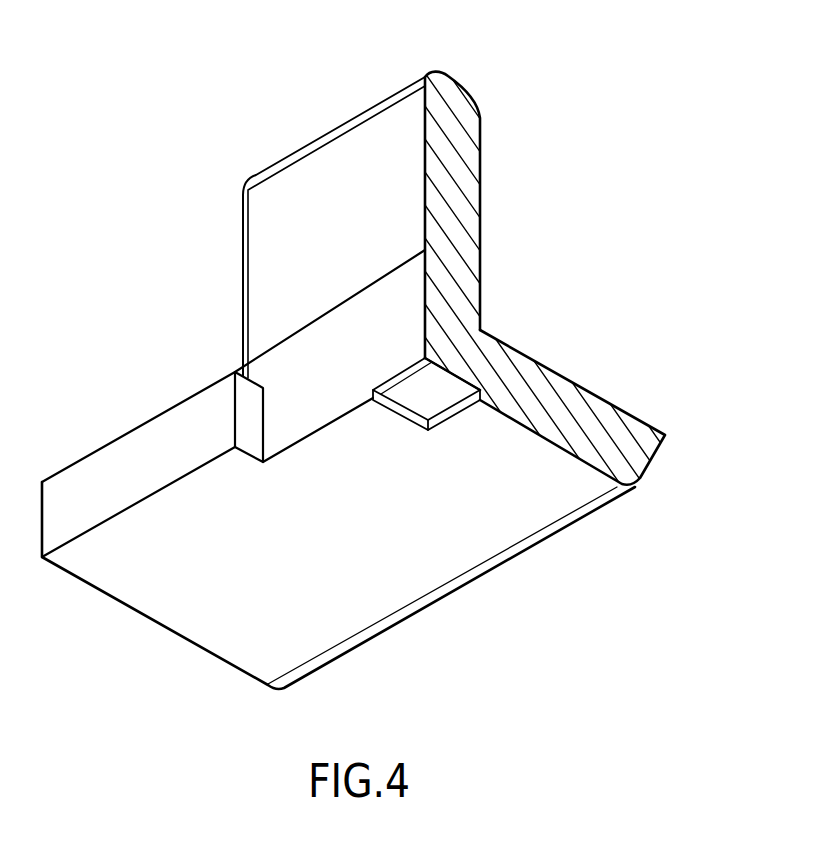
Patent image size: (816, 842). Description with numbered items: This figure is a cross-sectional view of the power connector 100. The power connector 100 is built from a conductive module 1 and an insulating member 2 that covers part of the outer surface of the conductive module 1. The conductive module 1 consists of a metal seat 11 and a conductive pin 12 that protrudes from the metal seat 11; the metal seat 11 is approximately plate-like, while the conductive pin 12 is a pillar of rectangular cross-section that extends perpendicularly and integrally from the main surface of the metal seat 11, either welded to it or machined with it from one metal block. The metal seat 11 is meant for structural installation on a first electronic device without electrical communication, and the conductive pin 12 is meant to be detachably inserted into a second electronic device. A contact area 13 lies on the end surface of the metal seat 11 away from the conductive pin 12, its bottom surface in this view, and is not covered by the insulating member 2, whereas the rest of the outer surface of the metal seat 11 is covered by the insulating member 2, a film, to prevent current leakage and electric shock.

The power connector 100 is at (90, 44).
The conductive module 1 is at (168, 203).
The metal seat 11 is at (570, 395).
The conductive pin 12 is at (277, 202).
The contact area 13 is at (425, 383).
The insulating member 2 is at (150, 453).